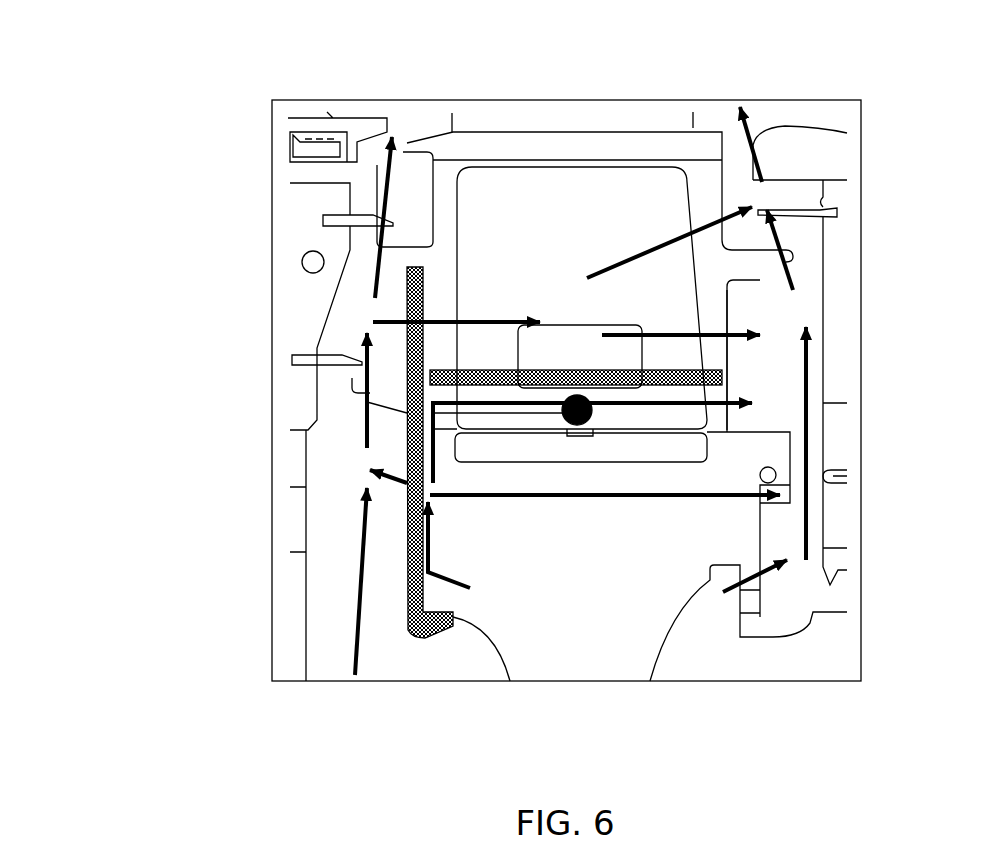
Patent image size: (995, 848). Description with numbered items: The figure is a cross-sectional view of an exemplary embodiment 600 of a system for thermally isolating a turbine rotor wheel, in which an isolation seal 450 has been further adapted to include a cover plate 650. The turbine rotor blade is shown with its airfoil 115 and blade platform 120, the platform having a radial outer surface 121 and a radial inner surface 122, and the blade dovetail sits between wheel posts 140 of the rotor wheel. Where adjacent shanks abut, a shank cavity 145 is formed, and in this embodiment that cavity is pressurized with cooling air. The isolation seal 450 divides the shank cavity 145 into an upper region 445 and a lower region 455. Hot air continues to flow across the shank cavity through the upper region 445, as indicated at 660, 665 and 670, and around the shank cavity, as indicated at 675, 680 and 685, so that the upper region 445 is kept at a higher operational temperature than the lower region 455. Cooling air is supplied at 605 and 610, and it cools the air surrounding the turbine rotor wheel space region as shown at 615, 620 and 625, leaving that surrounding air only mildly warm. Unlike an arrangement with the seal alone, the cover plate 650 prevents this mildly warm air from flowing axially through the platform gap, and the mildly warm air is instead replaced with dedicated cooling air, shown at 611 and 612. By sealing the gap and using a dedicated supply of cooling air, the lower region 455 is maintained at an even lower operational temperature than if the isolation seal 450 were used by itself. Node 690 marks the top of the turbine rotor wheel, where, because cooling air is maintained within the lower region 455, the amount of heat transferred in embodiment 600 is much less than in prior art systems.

The airfoil 115 is at (675, 113).
The blade platform 120 is at (448, 132).
The radial outer surface 121 is at (483, 132).
The radial inner surface 122 is at (543, 167).
The upper region 445 is at (557, 229).
The lower region 455 is at (563, 484).
The hot air flow through upper region 670 is at (650, 250).
The hot air flow around shank cavity 685 is at (760, 163).
The hot air flow around shank cavity 680 is at (780, 243).
The hot air flow through upper region 665 is at (727, 320).
The shank cavity 145 is at (703, 350).
The isolation seal 450 is at (725, 383).
The node 690 is at (590, 413).
The cooling air flow around wheel space region 620 is at (808, 493).
The dedicated cooling air flow 611 is at (700, 496).
The cooling air supply 610 is at (755, 582).
The wheel post 140 is at (603, 627).
The hot air flow around shank cavity 675 is at (400, 262).
The hot air flow through upper region 660 is at (377, 321).
The dedicated cooling air flow 612 is at (407, 399).
The cooling air flow around wheel space region 625 is at (367, 438).
The cover plate 650 is at (407, 447).
The cooling air flow around wheel space region 615 is at (428, 570).
The cooling air supply 605 is at (405, 603).
The embodiment 600 is at (48, 692).